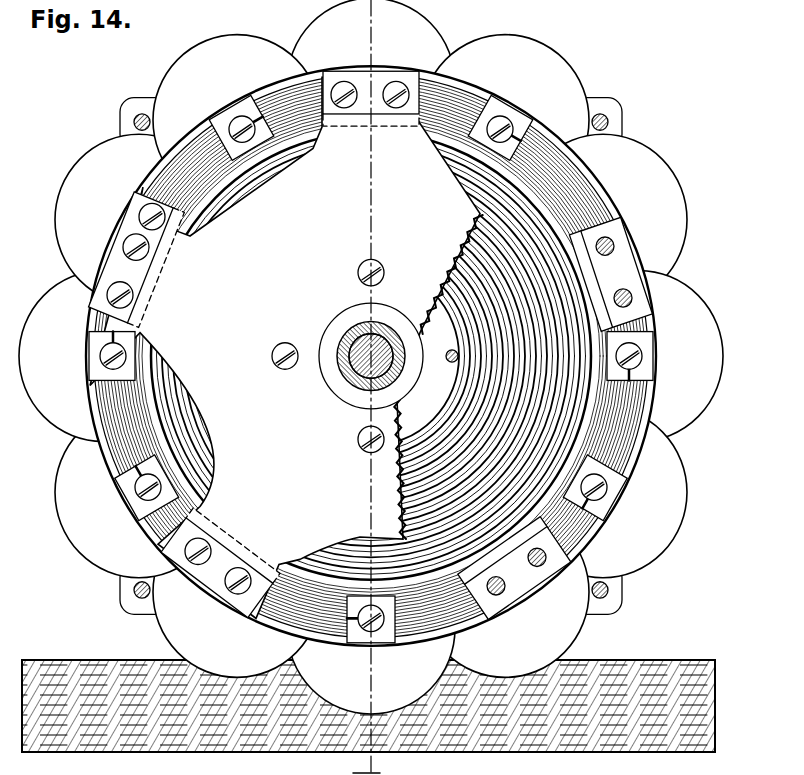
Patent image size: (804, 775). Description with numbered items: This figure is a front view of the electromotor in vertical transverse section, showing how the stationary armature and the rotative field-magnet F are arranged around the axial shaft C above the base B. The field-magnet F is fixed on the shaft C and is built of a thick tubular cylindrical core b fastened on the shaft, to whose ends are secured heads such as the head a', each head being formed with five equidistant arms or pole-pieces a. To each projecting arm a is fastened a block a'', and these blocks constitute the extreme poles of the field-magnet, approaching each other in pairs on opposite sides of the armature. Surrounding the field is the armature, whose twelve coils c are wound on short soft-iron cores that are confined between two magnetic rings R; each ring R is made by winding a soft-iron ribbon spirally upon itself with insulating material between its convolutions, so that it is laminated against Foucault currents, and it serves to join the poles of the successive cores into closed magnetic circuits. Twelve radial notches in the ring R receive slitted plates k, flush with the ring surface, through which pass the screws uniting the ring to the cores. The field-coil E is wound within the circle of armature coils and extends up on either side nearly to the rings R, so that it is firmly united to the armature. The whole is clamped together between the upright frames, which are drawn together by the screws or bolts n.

The base B is at (601, 700).
The screws or bolts n is at (136, 123).
The coils c is at (371, 357).
The tubular cylindrical core b is at (371, 356).
The magnetic ring R is at (462, 100).
The end piece or head a' is at (285, 347).
The field-coil E is at (406, 492).
The field-magnet F is at (355, 397).
The axial shaft C is at (371, 355).
The plate k is at (145, 205).
The arm or pole-piece a is at (234, 369).
The block a'' is at (487, 345).